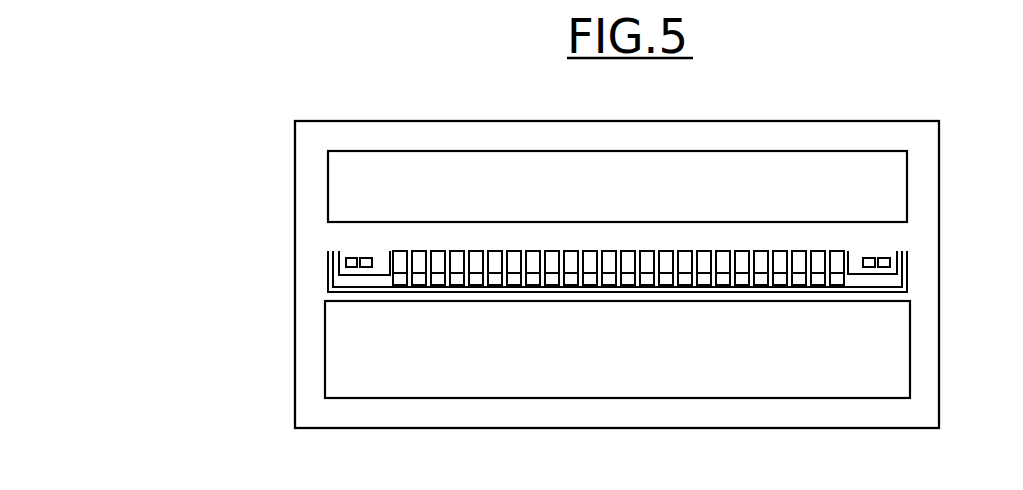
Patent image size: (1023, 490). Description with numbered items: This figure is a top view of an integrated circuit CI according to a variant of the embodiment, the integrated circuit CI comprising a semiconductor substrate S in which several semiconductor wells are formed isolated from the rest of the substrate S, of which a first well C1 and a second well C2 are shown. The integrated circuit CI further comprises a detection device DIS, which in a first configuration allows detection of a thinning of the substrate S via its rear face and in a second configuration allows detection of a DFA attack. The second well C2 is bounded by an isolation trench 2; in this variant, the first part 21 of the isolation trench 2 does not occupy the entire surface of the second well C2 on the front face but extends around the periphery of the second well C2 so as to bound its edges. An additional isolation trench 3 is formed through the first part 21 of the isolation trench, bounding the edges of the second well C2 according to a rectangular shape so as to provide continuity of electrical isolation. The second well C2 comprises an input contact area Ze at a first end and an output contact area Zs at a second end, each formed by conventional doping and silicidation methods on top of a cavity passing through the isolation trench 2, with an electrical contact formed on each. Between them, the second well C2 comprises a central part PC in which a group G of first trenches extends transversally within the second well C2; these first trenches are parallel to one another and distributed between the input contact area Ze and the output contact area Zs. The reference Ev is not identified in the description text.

The integrated circuit CI is at (870, 85).
The detection device DIS is at (294, 261).
The isolation trench 2 is at (928, 188).
The first well C1 is at (597, 184).
The first part of the isolation trench 21 is at (672, 237).
The screen / display panel Ev is at (580, 363).
The semiconductor substrate S is at (637, 428).
The additional isolation trench 3 is at (865, 292).
The input contact area Ze is at (394, 273).
The output contact area Zs is at (894, 262).
The second well C2 is at (399, 249).
The group of at least a first trench G is at (483, 253).
The central part PC is at (529, 255).